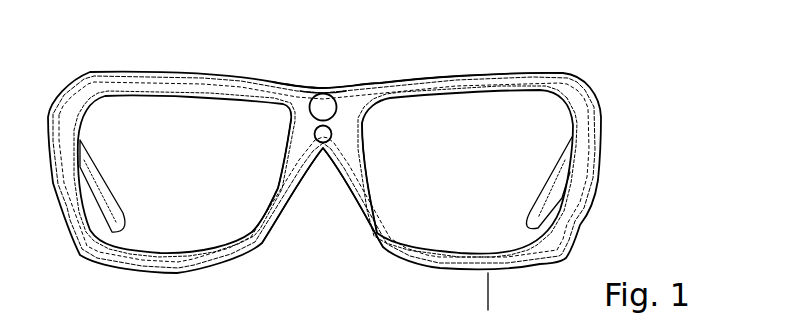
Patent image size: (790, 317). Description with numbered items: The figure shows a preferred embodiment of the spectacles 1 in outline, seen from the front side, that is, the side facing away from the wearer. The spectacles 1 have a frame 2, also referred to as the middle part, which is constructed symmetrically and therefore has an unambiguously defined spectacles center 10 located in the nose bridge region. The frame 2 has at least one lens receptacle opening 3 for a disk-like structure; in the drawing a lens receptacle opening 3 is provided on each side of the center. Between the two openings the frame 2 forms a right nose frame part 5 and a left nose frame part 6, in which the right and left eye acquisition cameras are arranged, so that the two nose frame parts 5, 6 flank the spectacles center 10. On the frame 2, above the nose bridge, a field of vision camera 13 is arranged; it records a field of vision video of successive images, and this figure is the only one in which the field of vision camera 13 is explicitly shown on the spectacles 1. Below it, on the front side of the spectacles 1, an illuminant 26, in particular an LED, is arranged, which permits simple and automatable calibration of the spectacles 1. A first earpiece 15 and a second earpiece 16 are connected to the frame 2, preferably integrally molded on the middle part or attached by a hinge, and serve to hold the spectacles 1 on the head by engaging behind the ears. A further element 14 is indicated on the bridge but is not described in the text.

The spectacles 1 is at (575, 98).
The frame 2 is at (417, 78).
The lens receptacle opening 3 is at (217, 240).
The right nose frame part 5 is at (272, 190).
The left nose frame part 6 is at (377, 198).
The spectacles center 10 is at (323, 150).
The field of vision camera 13 is at (320, 112).
The bridge top 14 is at (322, 92).
The first earpiece 15 is at (107, 202).
The second earpiece 16 is at (547, 193).
The illuminant 26 is at (315, 137).